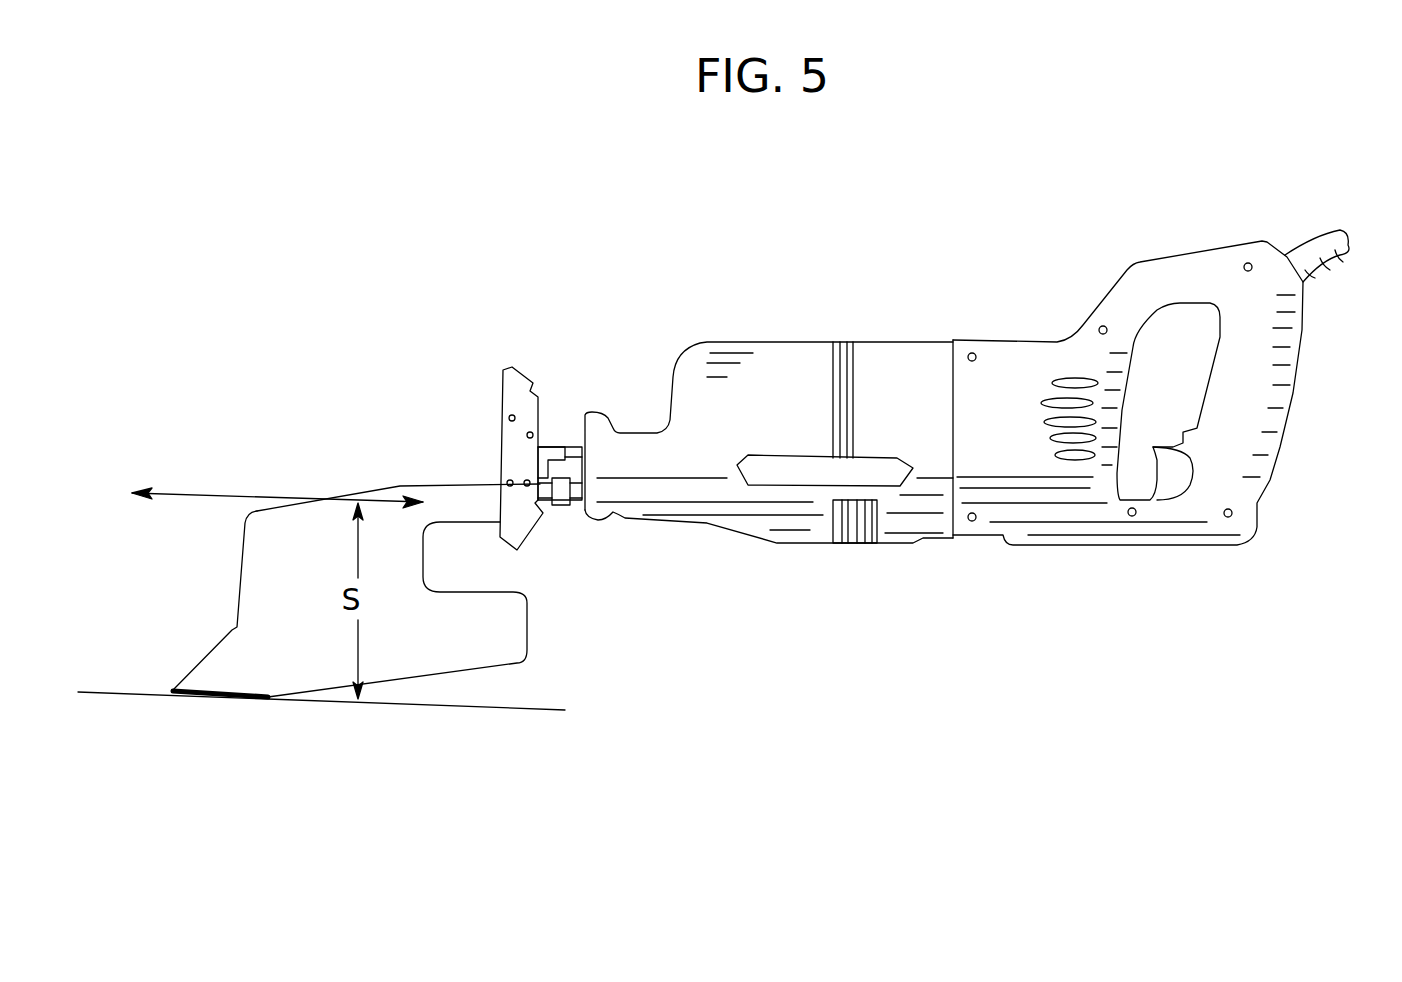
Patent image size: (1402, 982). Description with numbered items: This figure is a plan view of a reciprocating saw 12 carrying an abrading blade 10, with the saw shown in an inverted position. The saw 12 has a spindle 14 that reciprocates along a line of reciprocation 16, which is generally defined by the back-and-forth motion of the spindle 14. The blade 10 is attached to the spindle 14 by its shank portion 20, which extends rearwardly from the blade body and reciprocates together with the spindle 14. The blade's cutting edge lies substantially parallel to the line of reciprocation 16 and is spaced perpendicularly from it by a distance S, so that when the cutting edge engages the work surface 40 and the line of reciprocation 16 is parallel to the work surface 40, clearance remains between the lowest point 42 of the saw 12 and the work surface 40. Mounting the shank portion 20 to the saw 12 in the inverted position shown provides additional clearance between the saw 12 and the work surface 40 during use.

The abrading blade 10 is at (222, 612).
The reciprocating saw 12 is at (1120, 545).
The spindle 14 is at (575, 500).
The line of reciprocation 16 is at (197, 497).
The shank portion 20 is at (547, 507).
The work surface 40 is at (120, 693).
The lowest point 42 is at (622, 520).